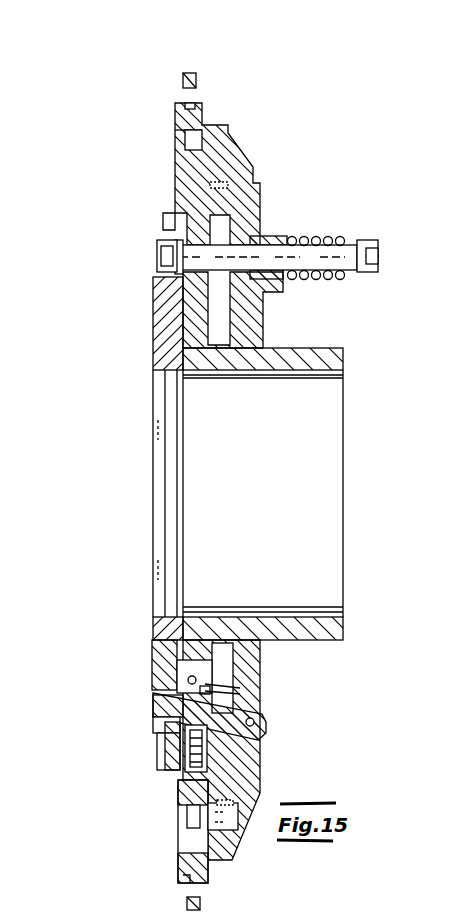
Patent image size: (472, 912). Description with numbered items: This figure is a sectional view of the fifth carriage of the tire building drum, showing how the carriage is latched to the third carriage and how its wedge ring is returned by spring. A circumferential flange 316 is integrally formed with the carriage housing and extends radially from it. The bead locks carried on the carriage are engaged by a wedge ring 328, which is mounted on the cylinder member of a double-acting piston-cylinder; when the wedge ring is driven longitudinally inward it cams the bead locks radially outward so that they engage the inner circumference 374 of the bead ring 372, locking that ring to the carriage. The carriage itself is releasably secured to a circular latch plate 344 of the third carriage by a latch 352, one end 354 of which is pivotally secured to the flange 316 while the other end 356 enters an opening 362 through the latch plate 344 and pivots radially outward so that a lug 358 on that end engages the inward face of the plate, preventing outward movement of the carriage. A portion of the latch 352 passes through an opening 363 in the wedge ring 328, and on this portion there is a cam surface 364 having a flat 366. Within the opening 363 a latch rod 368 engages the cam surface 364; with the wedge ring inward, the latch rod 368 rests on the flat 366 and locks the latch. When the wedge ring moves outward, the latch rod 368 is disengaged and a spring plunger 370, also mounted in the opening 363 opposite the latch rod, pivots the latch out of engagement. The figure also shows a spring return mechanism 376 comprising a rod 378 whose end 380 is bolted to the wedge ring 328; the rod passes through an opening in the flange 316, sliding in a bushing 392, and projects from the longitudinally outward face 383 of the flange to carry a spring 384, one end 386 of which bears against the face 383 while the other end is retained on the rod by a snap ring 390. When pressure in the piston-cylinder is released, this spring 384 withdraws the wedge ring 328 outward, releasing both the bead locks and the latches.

The circumferential flange 316 is at (252, 331).
The wedge ring 328 is at (195, 305).
The latch plate 344 is at (167, 642).
The latch 352 is at (160, 251).
The end of latch 354 is at (257, 725).
The other end of latch 356 is at (150, 717).
The lug 358 is at (158, 725).
The opening 362 is at (165, 676).
The opening 363 is at (205, 687).
The cam surface 364 is at (207, 691).
The flat 366 is at (155, 708).
The latch rod 368 is at (190, 678).
The spring plunger 370 is at (180, 773).
The bead ring 372 is at (182, 80).
The inner circumference 374 is at (196, 86).
The spring return mechanism 376 is at (336, 232).
The rod 378 is at (300, 263).
The end of rod 380 is at (173, 270).
The longitudinally outward face 383 is at (263, 313).
The spring 384 is at (322, 277).
The end of spring 386 is at (285, 238).
The snap ring 390 is at (363, 243).
The bushing 392 is at (263, 228).